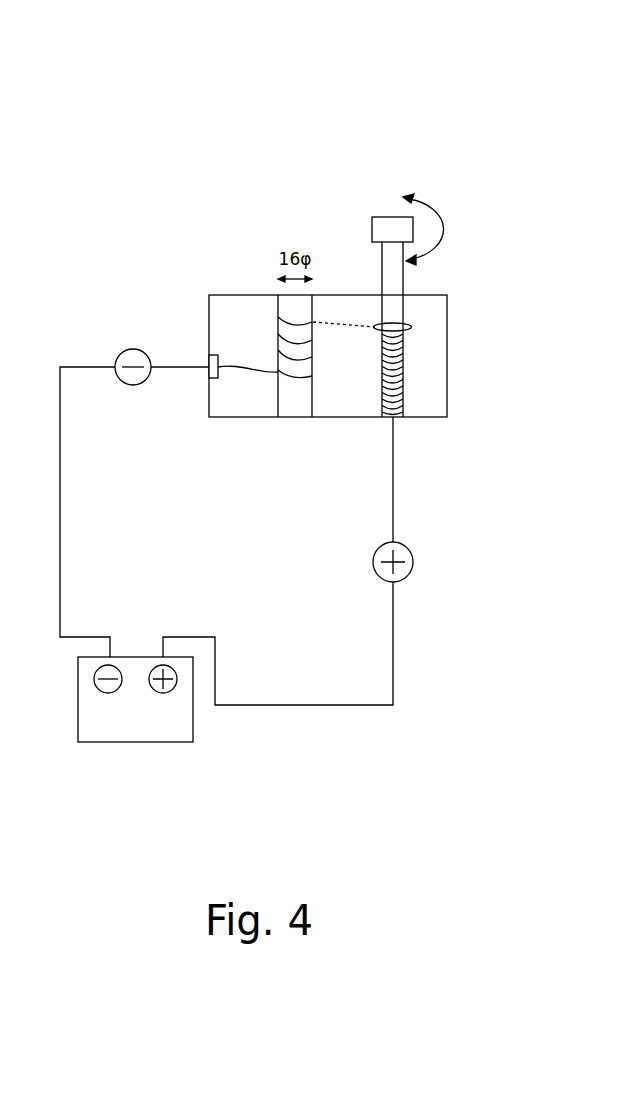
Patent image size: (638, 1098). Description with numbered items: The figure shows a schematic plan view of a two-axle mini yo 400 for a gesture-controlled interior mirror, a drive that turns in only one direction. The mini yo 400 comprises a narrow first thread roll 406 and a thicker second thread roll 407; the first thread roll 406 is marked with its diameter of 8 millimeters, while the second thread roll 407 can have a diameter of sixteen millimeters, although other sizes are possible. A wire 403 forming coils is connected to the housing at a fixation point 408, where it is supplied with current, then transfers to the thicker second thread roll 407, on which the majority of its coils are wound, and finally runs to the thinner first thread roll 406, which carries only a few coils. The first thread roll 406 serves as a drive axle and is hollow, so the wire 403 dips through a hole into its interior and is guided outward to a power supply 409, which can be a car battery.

The two-axle mini yo 400 is at (238, 96).
The wire 403 is at (285, 354).
The first thread roll 406 is at (404, 420).
The second thread roll 407 is at (295, 418).
The fixation point 408 is at (199, 377).
The power supply 409 is at (133, 720).
The screw diameter (phi 8) 8 is at (404, 372).